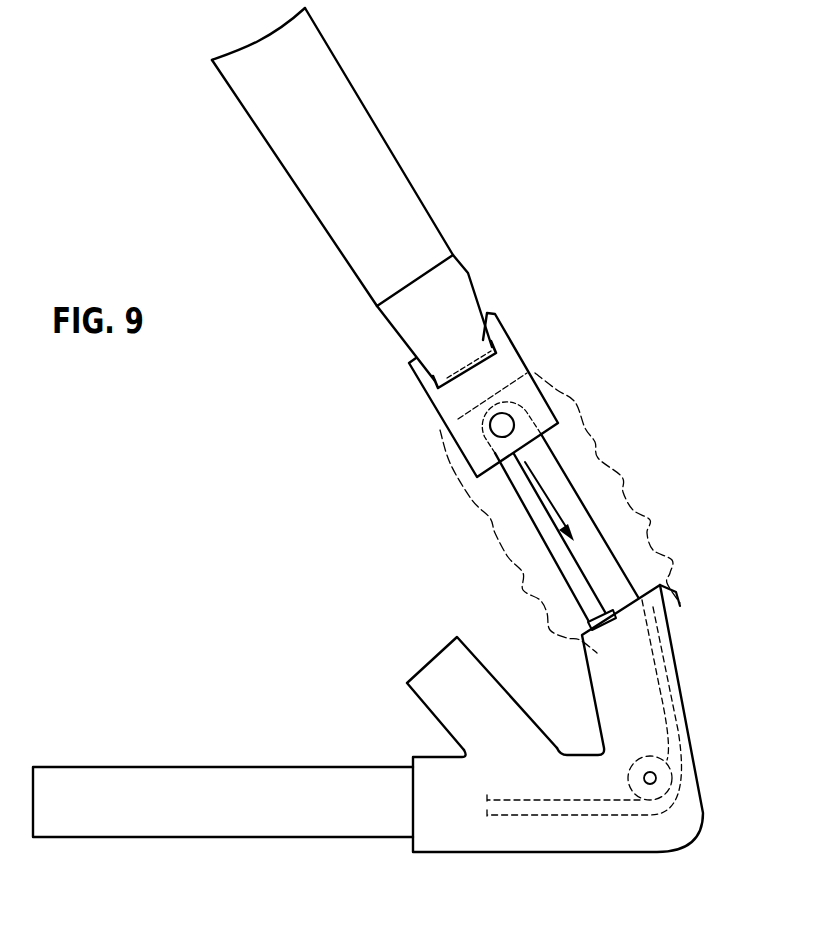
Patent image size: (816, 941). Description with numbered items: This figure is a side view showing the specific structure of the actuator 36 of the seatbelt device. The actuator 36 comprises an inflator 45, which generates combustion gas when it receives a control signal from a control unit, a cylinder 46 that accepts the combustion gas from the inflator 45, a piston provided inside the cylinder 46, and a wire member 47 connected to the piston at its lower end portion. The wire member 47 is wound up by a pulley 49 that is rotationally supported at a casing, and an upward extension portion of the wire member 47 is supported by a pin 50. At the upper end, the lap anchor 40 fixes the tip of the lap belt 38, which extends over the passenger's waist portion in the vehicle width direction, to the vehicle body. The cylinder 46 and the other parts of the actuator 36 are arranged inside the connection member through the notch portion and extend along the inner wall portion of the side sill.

The lap belt 38 is at (388, 143).
The lap anchor 40 is at (512, 360).
The pin 50 is at (502, 425).
The wire member 47 is at (607, 530).
The inflator 45 is at (437, 667).
The cylinder 46 is at (133, 777).
The actuator 36 is at (262, 853).
The pulley 49 is at (640, 793).